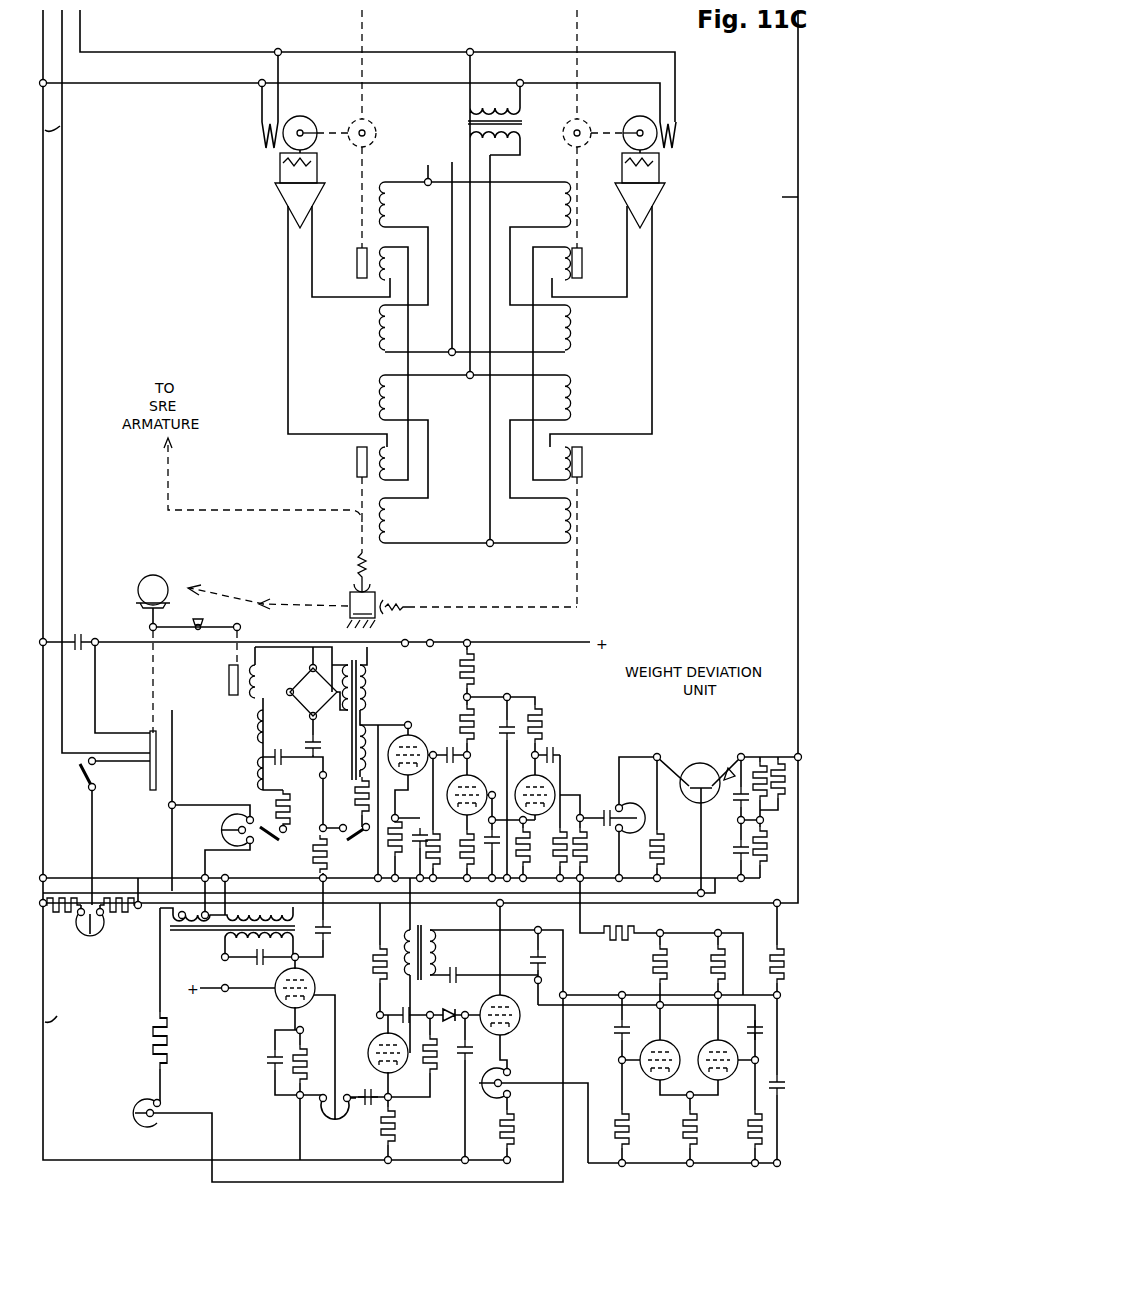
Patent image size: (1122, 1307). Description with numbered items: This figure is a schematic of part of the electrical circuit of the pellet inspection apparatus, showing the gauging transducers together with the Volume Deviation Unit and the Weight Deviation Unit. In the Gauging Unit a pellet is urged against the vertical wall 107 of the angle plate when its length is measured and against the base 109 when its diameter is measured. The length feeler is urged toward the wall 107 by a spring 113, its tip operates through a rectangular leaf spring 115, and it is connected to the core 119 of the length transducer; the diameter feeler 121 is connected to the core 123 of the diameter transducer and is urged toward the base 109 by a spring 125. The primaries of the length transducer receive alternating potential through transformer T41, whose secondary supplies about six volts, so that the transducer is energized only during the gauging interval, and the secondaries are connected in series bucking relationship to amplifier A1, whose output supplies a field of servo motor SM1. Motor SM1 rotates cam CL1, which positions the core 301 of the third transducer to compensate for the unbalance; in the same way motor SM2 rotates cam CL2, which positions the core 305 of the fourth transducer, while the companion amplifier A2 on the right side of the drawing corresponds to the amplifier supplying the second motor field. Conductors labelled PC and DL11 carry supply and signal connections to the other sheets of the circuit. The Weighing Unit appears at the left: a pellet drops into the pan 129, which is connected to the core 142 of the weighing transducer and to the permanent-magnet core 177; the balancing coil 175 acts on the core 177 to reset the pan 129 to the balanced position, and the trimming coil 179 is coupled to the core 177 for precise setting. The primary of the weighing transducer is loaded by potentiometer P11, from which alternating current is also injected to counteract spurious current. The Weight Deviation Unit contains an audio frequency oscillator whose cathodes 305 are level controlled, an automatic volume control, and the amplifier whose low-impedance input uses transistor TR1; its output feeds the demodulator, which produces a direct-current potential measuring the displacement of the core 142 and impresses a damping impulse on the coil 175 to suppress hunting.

The core of LVDT3 301 is at (353, 261).
The core of LVDT4 305 is at (582, 262).
The core of LVDT1 119 is at (357, 464).
The core of LVDT2 123 is at (582, 464).
The spring 113 is at (358, 557).
The rectangular leaf spring 115 is at (356, 584).
The vertical wall 107 is at (350, 604).
The base 109 is at (372, 620).
The diameter feeler 121 is at (385, 601).
The spring 125 is at (405, 607).
The pan 129 is at (140, 606).
The core of LVDT5 142 is at (229, 683).
The balancing coil 175 is at (150, 749).
The permanent-magnet core 177 is at (150, 736).
The trimming coil 179 is at (150, 775).
The servo motor SM1 is at (315, 111).
The motor SM2 is at (649, 111).
The cam CL1 is at (371, 122).
The cam CL2 is at (567, 122).
The amplifier A1 is at (290, 195).
The amplifier A2 is at (652, 195).
The transformer T41 is at (508, 103).
The power conductor PC is at (68, 562).
The line DL11 is at (775, 197).
The transistor TR1 is at (716, 754).
The potentiometer P11 is at (222, 835).